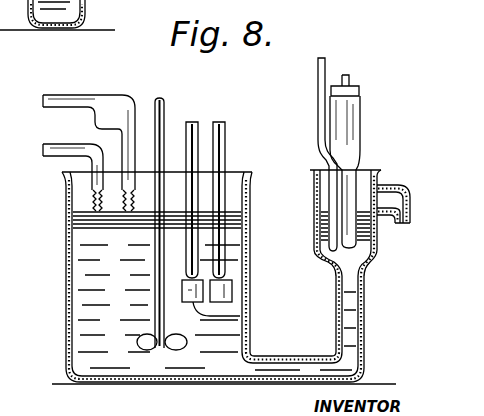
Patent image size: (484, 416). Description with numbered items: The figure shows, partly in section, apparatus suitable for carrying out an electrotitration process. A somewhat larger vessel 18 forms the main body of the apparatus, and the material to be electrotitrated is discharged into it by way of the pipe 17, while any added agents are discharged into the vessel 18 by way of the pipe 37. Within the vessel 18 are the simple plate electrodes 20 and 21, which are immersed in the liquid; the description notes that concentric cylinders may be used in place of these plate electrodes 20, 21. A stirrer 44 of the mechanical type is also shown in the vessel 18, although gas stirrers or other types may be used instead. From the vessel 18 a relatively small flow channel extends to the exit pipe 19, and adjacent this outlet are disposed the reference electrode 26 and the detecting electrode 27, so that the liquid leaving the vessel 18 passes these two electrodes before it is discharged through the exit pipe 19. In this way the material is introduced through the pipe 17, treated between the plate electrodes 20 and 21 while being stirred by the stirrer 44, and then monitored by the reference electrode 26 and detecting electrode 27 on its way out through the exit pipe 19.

The pipe 17 is at (102, 130).
The vessel 18 is at (72, 270).
The exit pipe 19 is at (397, 223).
The plate electrode 20 is at (228, 282).
The plate electrode 21 is at (240, 312).
The reference electrode 26 is at (350, 143).
The detecting electrode 27 is at (360, 266).
The pipe 37 is at (100, 183).
The stirrer 44 is at (137, 341).